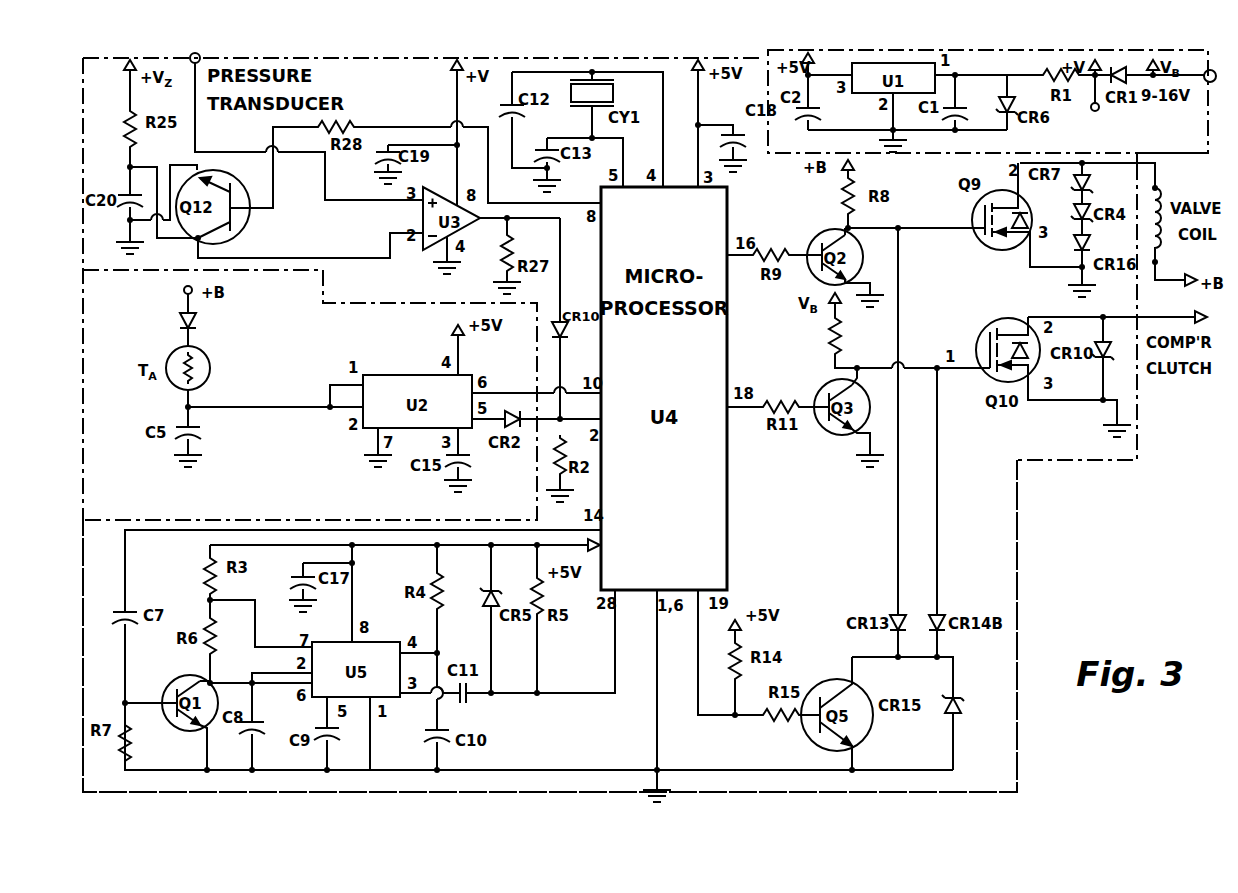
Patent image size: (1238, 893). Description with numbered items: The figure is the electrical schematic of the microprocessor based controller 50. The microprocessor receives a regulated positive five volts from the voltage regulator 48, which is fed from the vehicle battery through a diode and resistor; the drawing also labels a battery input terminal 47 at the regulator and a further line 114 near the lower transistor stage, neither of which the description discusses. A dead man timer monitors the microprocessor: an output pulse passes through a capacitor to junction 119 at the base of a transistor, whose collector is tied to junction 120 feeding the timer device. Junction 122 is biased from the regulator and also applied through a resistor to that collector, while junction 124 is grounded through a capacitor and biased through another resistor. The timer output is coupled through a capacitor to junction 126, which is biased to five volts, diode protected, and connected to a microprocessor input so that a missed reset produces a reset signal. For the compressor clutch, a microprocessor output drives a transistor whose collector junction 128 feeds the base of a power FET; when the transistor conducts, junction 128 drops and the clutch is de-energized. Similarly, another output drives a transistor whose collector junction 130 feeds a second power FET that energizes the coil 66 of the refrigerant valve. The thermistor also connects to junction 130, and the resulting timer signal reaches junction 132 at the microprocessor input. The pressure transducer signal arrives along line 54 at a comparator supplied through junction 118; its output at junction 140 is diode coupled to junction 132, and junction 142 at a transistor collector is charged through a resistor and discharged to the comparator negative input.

The line 54 is at (195, 64).
The junction 142 is at (128, 167).
The junction 118 is at (459, 147).
The junction 140 is at (508, 220).
The junction 130 is at (850, 226).
The junction 132 is at (557, 422).
The junction 128 is at (937, 365).
The power input terminal 47 is at (1208, 83).
The voltage regulator 48 is at (1172, 154).
The coil 66 is at (1160, 252).
The junction 122 is at (208, 600).
The junction 119 is at (126, 702).
The junction 120 is at (250, 682).
The junction 124 is at (439, 653).
The junction 126 is at (492, 695).
The microprocessor output line 114 is at (736, 717).
The controller 50 is at (1017, 762).